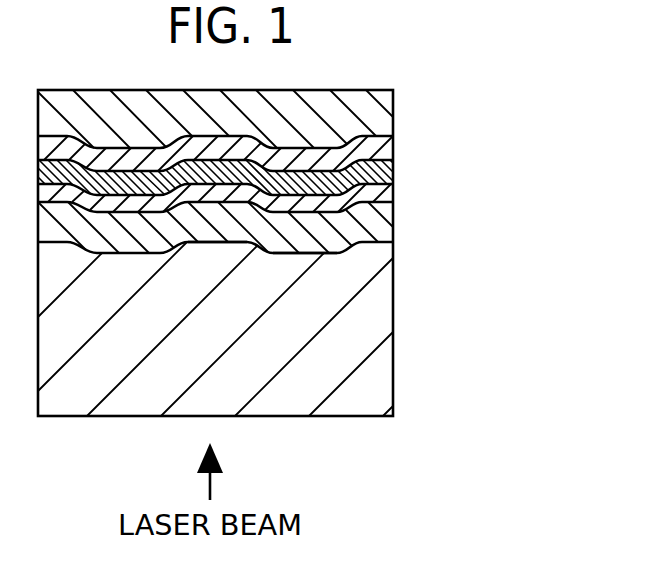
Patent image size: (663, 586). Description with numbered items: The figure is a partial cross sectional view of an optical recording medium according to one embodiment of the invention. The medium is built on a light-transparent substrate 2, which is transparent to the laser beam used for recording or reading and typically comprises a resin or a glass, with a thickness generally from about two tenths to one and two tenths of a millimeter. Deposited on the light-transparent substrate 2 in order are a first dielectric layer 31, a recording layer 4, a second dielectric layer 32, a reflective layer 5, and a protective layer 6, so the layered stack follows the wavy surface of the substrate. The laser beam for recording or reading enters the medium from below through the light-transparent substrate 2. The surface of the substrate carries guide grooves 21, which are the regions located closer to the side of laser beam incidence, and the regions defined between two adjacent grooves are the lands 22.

The light-transparent substrate 2 is at (394, 322).
The grooves 21 is at (291, 257).
The lands 22 is at (213, 243).
The first dielectric layer 31 is at (394, 223).
The recording layer 4 is at (394, 193).
The second dielectric layer 32 is at (394, 167).
The reflective layer 5 is at (394, 150).
The protective layer 6 is at (394, 113).